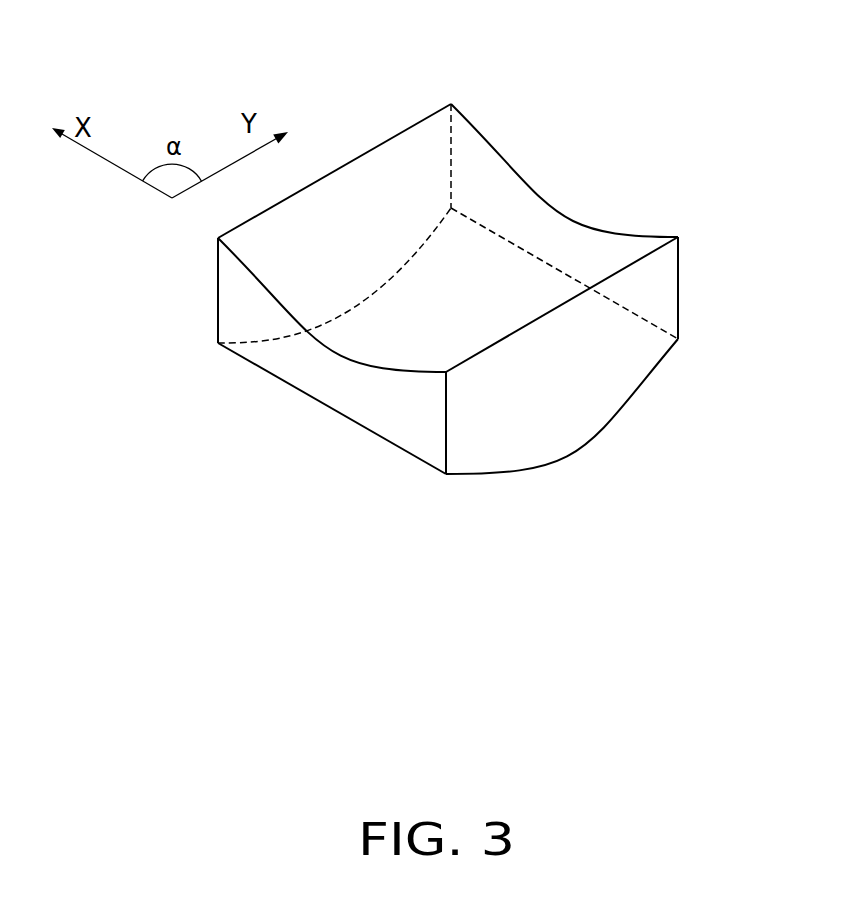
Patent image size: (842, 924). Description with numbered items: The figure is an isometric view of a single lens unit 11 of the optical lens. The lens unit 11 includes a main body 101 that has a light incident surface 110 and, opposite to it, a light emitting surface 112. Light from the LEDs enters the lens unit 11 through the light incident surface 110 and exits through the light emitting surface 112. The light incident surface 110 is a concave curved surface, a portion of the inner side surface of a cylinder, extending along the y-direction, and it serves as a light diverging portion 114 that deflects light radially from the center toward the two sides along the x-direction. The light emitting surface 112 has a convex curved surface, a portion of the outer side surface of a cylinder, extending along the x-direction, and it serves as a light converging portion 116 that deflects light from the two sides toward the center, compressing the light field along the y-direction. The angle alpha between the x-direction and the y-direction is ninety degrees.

The lens unit 11 is at (467, 56).
The main body 101 is at (678, 288).
The light incident surface 110 is at (522, 223).
The light emitting surface 112 is at (594, 434).
The light diverging portion 114 is at (408, 342).
The light converging portion 116 is at (632, 397).